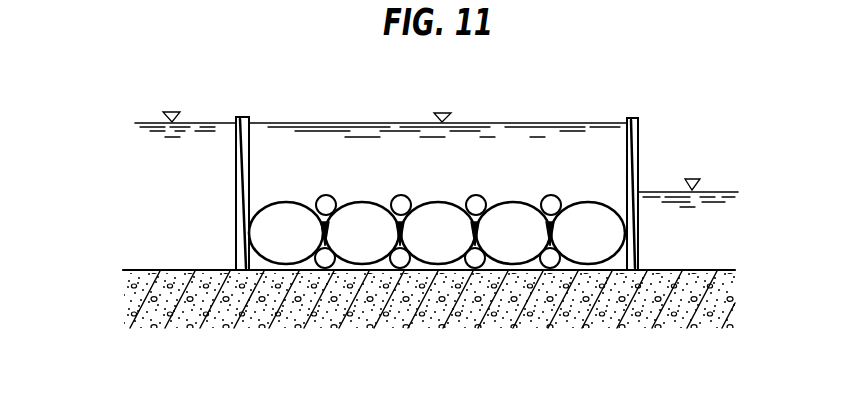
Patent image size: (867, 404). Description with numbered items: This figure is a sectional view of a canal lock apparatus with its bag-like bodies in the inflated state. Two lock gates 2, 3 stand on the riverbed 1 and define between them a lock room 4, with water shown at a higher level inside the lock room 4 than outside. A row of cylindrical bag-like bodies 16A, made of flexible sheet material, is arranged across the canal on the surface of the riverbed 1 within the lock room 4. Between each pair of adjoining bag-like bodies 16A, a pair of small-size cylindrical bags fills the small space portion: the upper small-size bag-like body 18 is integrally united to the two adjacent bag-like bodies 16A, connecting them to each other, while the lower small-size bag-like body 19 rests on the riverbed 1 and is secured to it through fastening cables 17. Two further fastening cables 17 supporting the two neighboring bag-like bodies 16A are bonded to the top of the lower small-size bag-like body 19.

The riverbed 1 is at (497, 305).
The lock gate 2 is at (246, 117).
The lock gate 3 is at (638, 118).
The lock room 4 is at (503, 116).
The bag-like body 16A is at (288, 202).
The fastening cable 17 is at (319, 253).
The upper small-size bag-like body 18 is at (337, 196).
The lower small-size bag-like body 19 is at (326, 262).